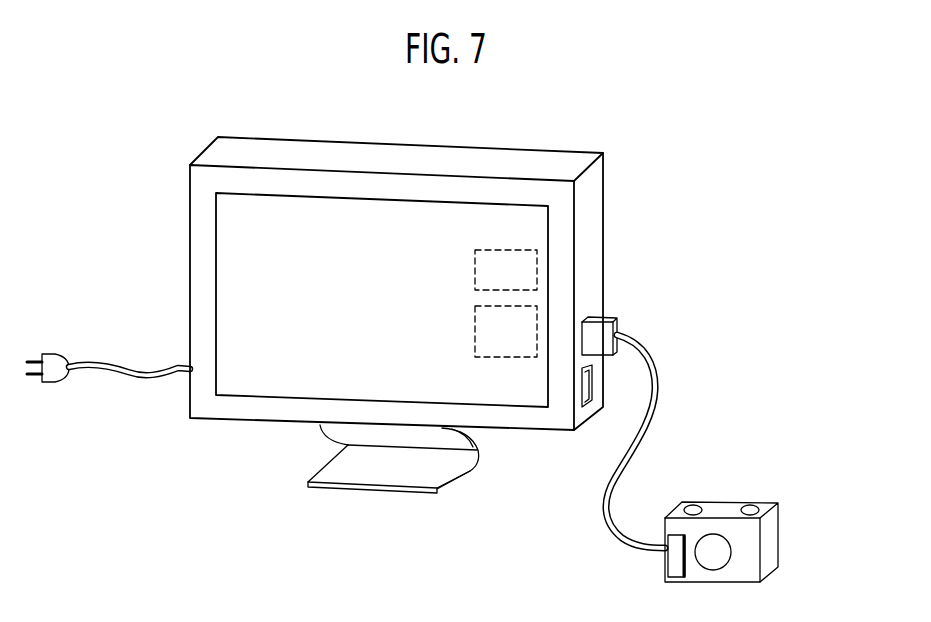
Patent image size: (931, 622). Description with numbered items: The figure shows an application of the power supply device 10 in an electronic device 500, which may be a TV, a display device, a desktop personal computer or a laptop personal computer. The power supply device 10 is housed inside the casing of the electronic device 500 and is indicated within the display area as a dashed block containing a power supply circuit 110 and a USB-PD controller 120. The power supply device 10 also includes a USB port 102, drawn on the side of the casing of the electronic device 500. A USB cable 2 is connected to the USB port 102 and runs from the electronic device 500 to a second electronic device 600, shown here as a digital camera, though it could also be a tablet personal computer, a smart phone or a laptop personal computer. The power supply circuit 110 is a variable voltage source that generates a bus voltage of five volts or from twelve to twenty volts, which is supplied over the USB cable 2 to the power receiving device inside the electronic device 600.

The electronic device 500 is at (520, 155).
The power supply device 10 is at (404, 240).
The USB-PD controller 120 is at (475, 262).
The power supply circuit 110 is at (475, 318).
The USB port 102 is at (601, 300).
The USB cable 2 is at (658, 366).
The electronic device 600 is at (782, 528).